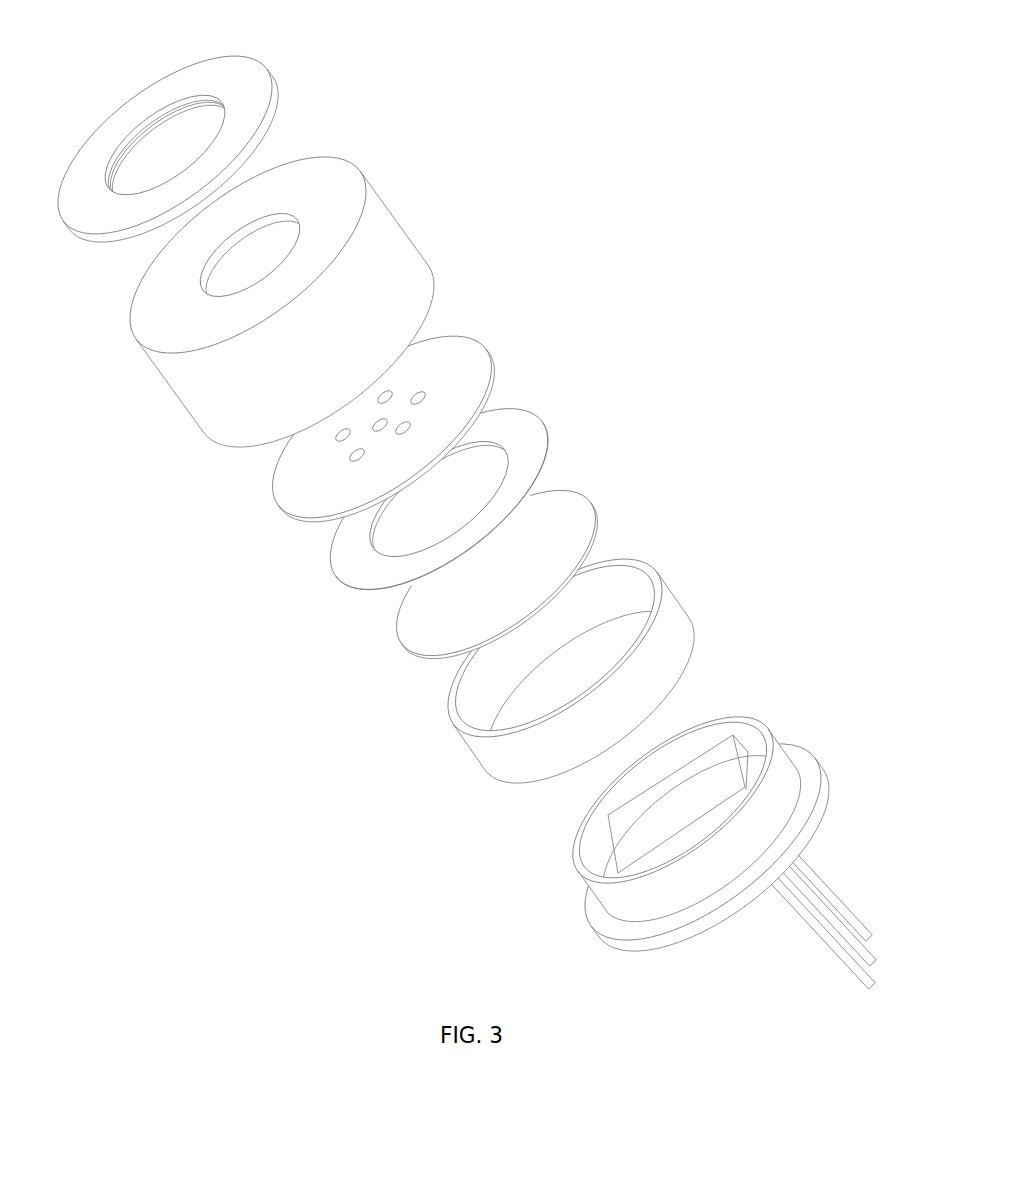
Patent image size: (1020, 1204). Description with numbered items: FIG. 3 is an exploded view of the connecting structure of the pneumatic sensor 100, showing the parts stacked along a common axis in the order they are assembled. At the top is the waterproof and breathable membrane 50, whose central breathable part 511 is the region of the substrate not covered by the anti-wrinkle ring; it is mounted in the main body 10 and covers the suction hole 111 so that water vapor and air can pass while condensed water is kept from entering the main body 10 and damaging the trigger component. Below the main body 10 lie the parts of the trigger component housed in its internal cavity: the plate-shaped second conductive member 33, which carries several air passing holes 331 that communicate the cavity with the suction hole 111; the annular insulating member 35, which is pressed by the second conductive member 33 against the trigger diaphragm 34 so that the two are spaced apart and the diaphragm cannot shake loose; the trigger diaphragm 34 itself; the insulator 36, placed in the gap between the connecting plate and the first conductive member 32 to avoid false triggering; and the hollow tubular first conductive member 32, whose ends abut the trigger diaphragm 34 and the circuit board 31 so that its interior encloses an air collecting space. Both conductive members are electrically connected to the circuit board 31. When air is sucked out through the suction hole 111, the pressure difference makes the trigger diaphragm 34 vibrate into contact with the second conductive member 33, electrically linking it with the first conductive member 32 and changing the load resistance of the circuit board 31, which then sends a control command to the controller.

The pneumatic sensor 100 is at (798, 65).
The waterproof and breathable membrane 50 is at (273, 78).
The breathable part 511 is at (163, 137).
The main body 10 is at (395, 237).
The suction hole 111 is at (276, 234).
The second conductive member 33 is at (450, 351).
The air passing hole 331 is at (377, 393).
The insulating member 35 is at (523, 431).
The trigger diaphragm 34 is at (555, 514).
The insulator 36 is at (478, 752).
The first conductive member 32 is at (772, 749).
The circuit board 31 is at (818, 789).